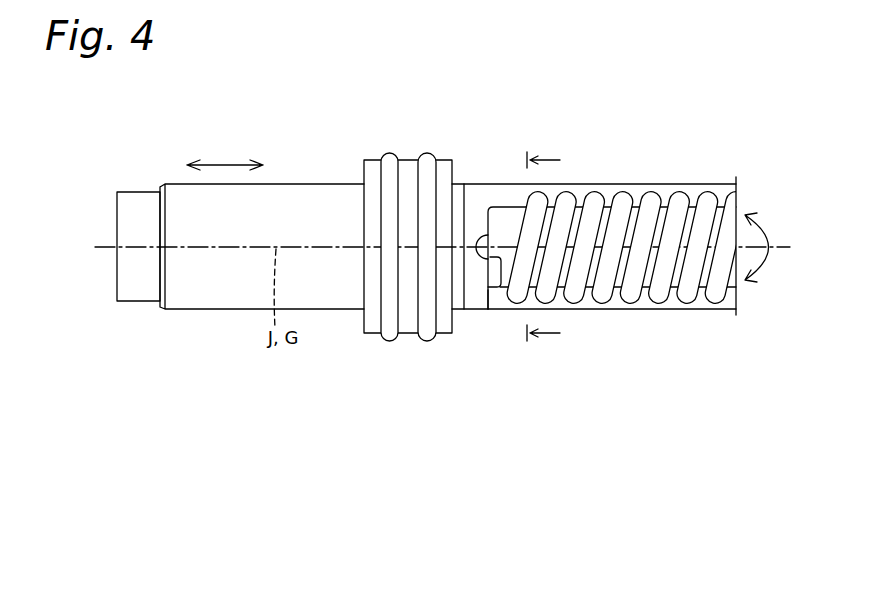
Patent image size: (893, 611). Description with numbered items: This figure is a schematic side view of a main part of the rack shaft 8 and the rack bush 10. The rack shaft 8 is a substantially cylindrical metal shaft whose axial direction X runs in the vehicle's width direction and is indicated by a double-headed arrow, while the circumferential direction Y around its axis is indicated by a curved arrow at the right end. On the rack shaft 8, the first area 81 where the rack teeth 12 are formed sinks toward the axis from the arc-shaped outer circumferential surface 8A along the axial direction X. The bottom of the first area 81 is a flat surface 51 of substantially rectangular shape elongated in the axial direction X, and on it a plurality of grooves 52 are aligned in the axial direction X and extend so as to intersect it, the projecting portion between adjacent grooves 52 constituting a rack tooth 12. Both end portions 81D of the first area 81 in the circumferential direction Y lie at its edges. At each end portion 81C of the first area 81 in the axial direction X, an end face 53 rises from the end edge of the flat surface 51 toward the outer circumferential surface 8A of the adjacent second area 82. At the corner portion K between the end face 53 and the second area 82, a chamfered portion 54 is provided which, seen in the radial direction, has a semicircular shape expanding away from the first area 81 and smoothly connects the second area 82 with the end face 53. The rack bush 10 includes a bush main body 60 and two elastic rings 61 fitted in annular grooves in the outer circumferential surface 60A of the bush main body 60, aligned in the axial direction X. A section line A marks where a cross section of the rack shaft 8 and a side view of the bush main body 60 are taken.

The rack shaft 8 is at (205, 300).
The rack bush 10 is at (397, 225).
The bush main body 60 is at (373, 167).
The elastic rings 61 is at (425, 152).
The outer circumferential surface 60A is at (367, 337).
The second area 82 is at (467, 208).
The outer circumferential surface 8A is at (473, 210).
The flat surface 51 is at (512, 210).
The end face 53 is at (493, 262).
The chamfered portion 54 is at (480, 258).
The end portion 81C is at (494, 300).
The rack teeth 12 is at (662, 193).
The grooves 52 is at (680, 303).
The first area 81 is at (596, 271).
The end portions 81D is at (722, 190).
The corner portion K is at (489, 208).
The line A- A is at (553, 246).
The axial direction X is at (226, 163).
The circumferential direction Y is at (760, 215).